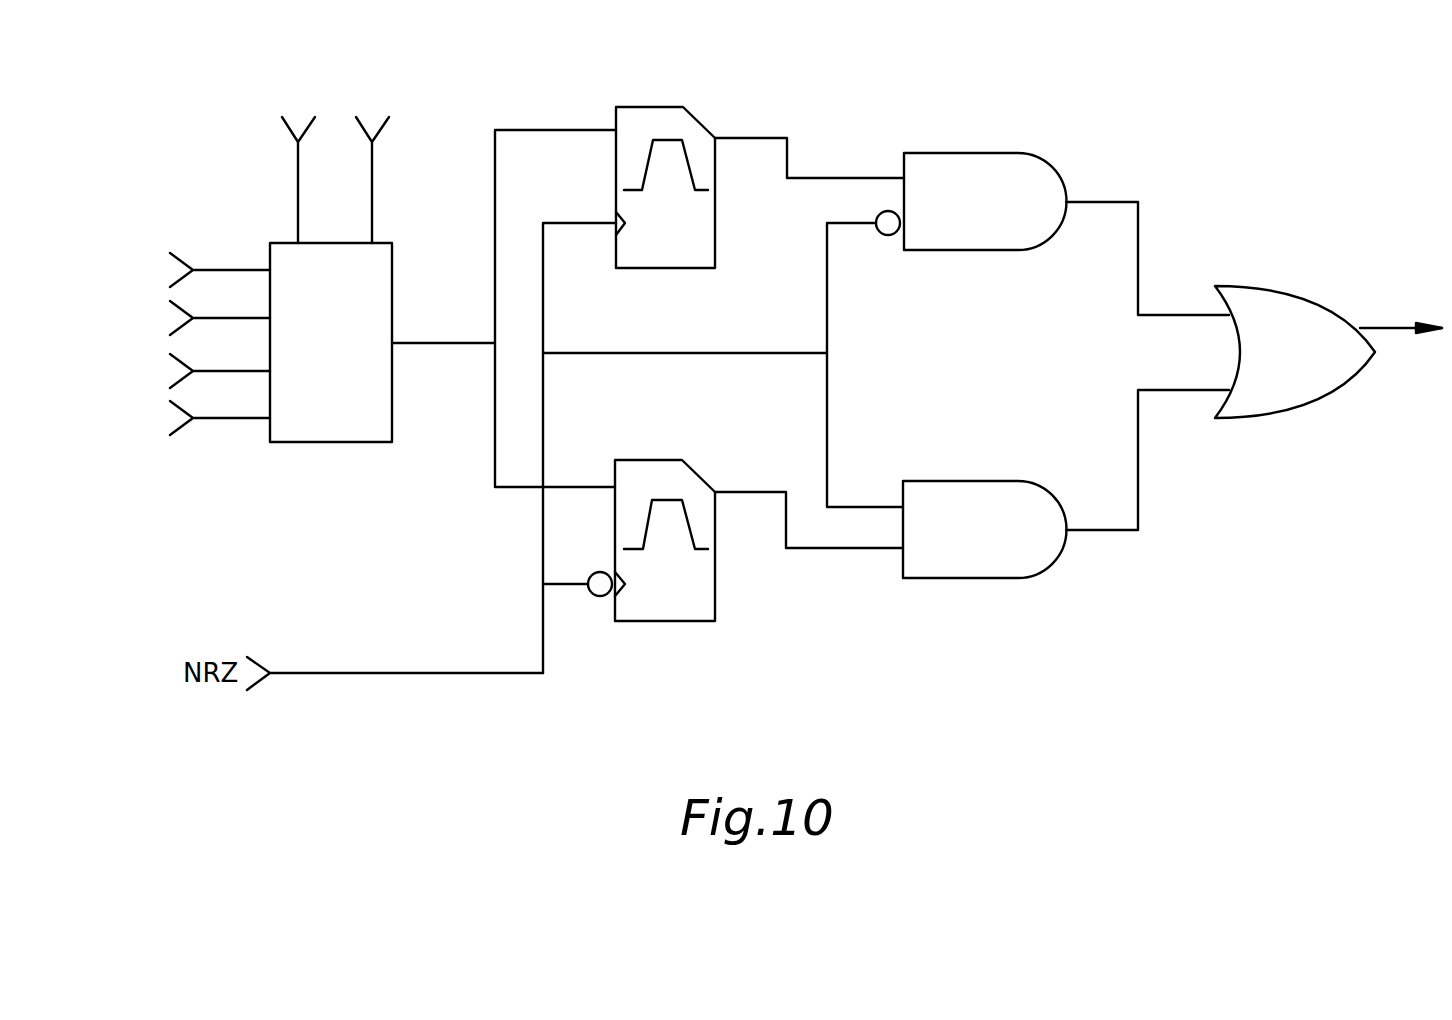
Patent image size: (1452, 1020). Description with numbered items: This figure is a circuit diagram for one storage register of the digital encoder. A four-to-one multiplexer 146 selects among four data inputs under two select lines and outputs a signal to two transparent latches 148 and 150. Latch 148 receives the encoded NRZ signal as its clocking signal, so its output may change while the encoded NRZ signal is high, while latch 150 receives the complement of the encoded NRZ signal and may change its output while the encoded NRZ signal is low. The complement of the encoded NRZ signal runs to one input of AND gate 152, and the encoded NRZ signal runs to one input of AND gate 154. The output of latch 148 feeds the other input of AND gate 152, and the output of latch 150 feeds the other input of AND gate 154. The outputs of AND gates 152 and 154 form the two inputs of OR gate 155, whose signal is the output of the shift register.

The 4:1 multiplexer 146 is at (385, 243).
The transparent latch 148 is at (632, 107).
The transparent latch 150 is at (678, 621).
The AND gate 152 is at (988, 153).
The AND gate 154 is at (938, 578).
The OR gate 155 is at (1255, 419).